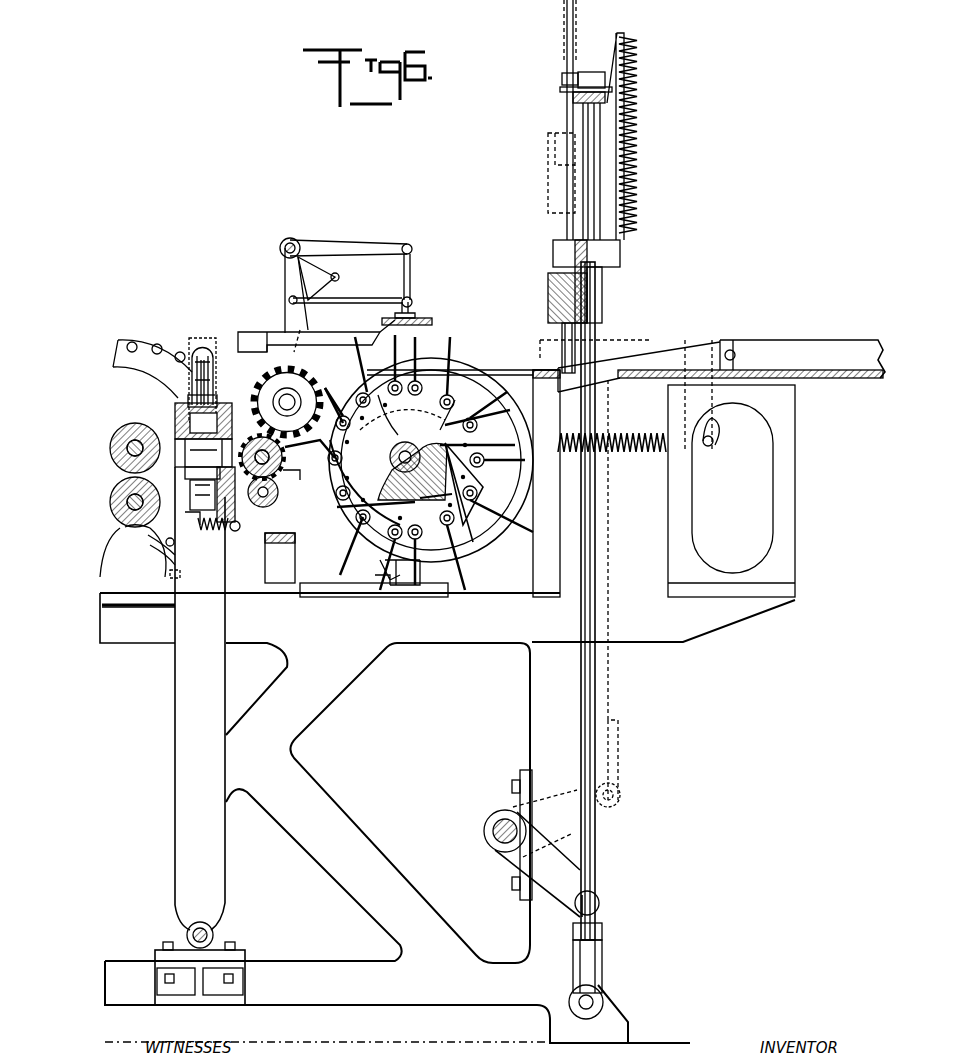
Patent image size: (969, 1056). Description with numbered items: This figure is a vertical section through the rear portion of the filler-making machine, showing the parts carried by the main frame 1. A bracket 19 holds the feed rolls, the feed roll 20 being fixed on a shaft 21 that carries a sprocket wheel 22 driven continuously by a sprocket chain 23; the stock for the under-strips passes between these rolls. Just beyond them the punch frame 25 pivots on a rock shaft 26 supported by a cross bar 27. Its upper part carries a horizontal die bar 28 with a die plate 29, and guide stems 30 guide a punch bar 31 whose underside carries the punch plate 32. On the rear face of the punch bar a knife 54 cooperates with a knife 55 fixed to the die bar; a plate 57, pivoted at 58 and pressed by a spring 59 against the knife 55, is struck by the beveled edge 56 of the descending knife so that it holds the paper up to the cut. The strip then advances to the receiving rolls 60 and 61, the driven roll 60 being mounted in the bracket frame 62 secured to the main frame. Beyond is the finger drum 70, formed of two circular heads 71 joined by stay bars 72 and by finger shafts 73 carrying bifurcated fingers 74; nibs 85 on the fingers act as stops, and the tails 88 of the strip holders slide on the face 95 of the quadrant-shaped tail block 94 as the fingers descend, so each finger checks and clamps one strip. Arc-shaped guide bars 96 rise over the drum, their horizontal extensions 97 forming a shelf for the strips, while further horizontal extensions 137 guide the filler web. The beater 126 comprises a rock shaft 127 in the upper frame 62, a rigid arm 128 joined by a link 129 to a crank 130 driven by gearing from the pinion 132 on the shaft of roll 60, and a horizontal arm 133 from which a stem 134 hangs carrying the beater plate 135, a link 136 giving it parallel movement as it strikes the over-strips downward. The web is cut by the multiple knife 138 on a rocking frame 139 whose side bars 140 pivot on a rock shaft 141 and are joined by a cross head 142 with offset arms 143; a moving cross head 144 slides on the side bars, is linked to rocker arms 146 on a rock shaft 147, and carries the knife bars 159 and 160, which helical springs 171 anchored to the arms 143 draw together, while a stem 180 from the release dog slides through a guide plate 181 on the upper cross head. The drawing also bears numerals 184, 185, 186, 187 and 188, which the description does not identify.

The main frame 1 is at (353, 838).
The bracket 19 is at (147, 598).
The feed roll 20 is at (135, 530).
The shaft 21 is at (122, 430).
The sprocket wheel 22 is at (158, 344).
The sprocket chain 23 is at (131, 342).
The punch frame 25 is at (215, 673).
The rock shaft 26 is at (213, 935).
The cross bar 27 is at (235, 965).
The die bar 28 is at (200, 528).
The die plate 29 is at (186, 472).
The guide stems 30 is at (203, 348).
The punch bar 31 is at (192, 355).
The punch plate 32 is at (185, 453).
The knife 54 is at (248, 350).
The knife 55 is at (208, 510).
The beveled edge 56 is at (180, 420).
The plate 57 is at (237, 512).
The pivot 58 is at (236, 532).
The spring 59 is at (218, 532).
The receiving roll 60 is at (310, 447).
The receiving roll 61 is at (278, 493).
The bracket frame 62 is at (338, 545).
The finger drum 70 is at (398, 380).
The circular heads 71 is at (437, 419).
The stay bars 72 is at (385, 420).
The finger shafts 73 is at (329, 397).
The fingers 74 is at (378, 572).
The nibs 85 is at (345, 508).
The tails 88 is at (440, 500).
The tail block 94 is at (398, 465).
The face 95 is at (477, 434).
The arc-shaped guide bars 96 is at (352, 364).
The horizontal extensions 97 is at (296, 468).
The beater 126 is at (280, 290).
The rock shaft 127 is at (293, 240).
The arm 128 is at (338, 276).
The link 129 is at (318, 305).
The crank 130 is at (293, 385).
The pinion 132 is at (255, 440).
The horizontal arm 133 is at (372, 242).
The stem 134 is at (410, 275).
The beater plate 135 is at (432, 321).
The link 136 is at (410, 292).
The horizontal extensions 137 is at (498, 380).
The multiple knife 138 is at (595, 345).
The rocking frame 139 is at (600, 692).
The side bars 140 is at (596, 548).
The rock shaft 141 is at (593, 1002).
The cross head 142 is at (560, 95).
The arms 143 is at (610, 52).
The moving cross head 144 is at (605, 272).
The rocker arms 146 is at (552, 905).
The rock shaft 147 is at (493, 830).
The knife bar 159 is at (548, 292).
The knife bar 160 is at (605, 292).
The helical springs 171 is at (635, 105).
The stem 180 is at (567, 118).
The guide plate 181 is at (562, 80).
The plate 184 is at (660, 360).
The pivot 185 is at (735, 350).
The table 186 is at (850, 378).
The spring 187 is at (618, 435).
The pivot 188 is at (716, 440).